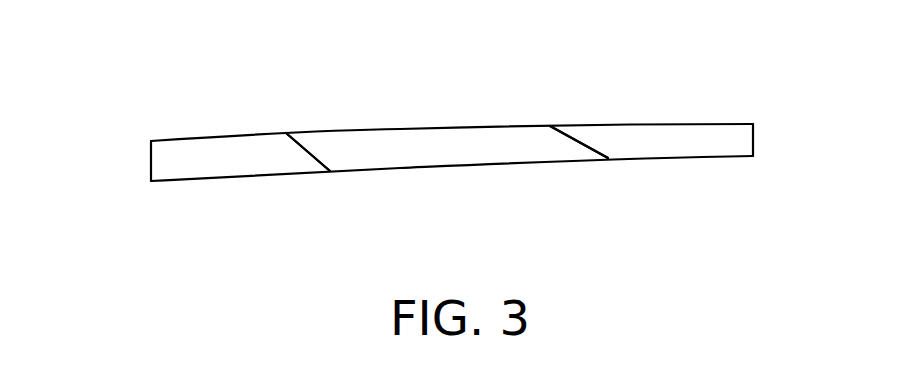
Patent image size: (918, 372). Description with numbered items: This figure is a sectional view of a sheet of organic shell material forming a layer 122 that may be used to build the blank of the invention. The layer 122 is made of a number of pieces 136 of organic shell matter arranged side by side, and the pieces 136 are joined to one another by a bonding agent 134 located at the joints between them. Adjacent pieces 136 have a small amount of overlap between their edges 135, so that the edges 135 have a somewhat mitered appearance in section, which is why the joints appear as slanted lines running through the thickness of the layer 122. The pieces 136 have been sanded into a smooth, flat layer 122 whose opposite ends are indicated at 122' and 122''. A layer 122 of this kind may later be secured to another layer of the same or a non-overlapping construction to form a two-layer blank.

The layer 122 is at (403, 159).
The first end of strip 122' is at (744, 97).
The second end of strip 122'' is at (158, 196).
The bonding agent 134 is at (289, 130).
The edges 135 is at (292, 156).
The pieces 136 is at (238, 162).